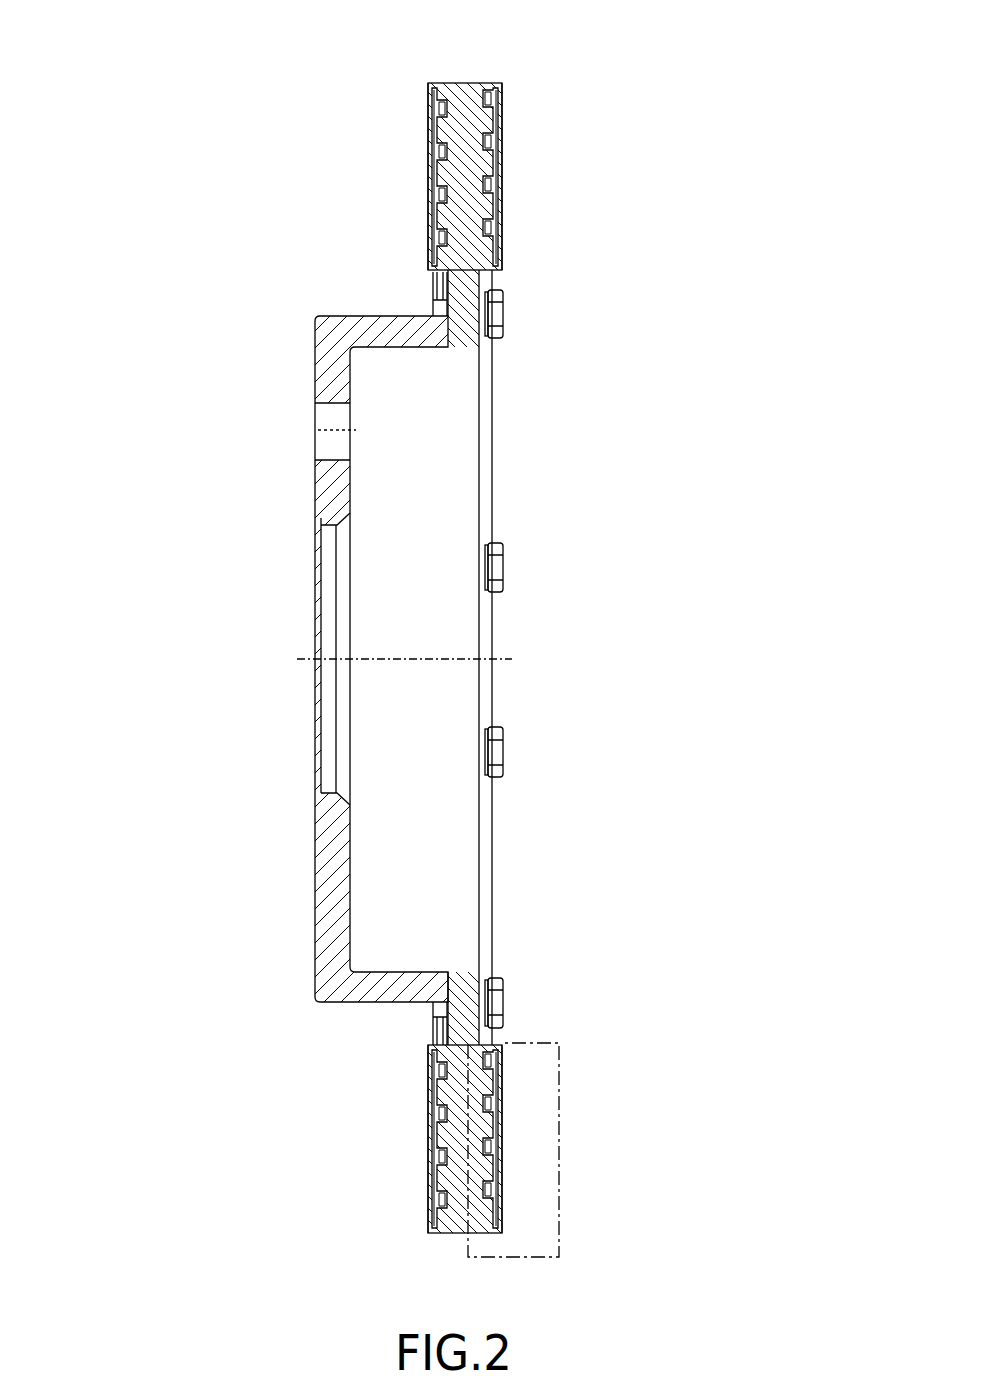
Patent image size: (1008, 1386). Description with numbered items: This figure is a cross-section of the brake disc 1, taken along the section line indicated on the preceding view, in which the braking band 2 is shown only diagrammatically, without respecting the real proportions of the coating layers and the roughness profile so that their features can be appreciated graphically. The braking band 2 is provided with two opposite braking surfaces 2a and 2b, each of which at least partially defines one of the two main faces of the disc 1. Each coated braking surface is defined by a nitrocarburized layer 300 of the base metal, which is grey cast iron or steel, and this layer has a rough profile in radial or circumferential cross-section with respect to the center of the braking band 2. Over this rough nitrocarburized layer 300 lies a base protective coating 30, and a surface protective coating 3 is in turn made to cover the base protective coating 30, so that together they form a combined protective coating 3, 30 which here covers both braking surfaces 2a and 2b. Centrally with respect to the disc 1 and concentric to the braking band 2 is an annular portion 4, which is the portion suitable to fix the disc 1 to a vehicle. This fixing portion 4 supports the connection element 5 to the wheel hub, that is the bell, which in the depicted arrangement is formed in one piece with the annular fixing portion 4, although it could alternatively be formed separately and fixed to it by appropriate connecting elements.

The brake disc 1 is at (190, 695).
The braking band 2 is at (456, 90).
The braking surface 2a is at (426, 122).
The braking surface 2b is at (502, 190).
The surface protective coating 3 is at (432, 228).
The base protective coating 30 is at (432, 212).
The nitrocarburized layer 300 is at (430, 160).
The annular portion 4 is at (480, 340).
The connection element 5 is at (330, 855).